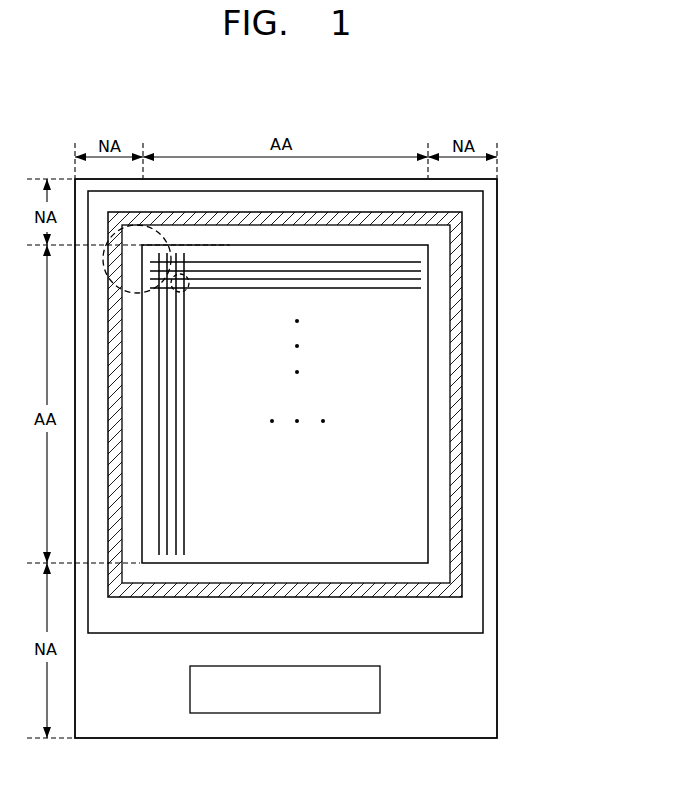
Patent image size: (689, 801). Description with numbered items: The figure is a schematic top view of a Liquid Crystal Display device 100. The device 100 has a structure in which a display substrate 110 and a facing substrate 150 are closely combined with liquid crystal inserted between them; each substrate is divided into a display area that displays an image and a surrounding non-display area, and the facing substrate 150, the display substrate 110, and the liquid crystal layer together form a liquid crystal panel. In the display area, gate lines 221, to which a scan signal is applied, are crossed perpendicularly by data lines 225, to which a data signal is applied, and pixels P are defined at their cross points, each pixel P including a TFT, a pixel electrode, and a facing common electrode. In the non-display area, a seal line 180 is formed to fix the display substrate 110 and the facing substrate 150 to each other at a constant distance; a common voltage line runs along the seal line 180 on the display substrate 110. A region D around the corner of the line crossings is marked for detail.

The Liquid Crystal Display (LCD) device 100 is at (486, 125).
The display substrate 110 is at (492, 404).
The facing substrate 150 is at (475, 438).
The seal line 180 is at (458, 467).
The gate lines 221 is at (243, 290).
The data lines 225 is at (185, 505).
The pixels P is at (188, 275).
The enlarged region D is at (162, 235).